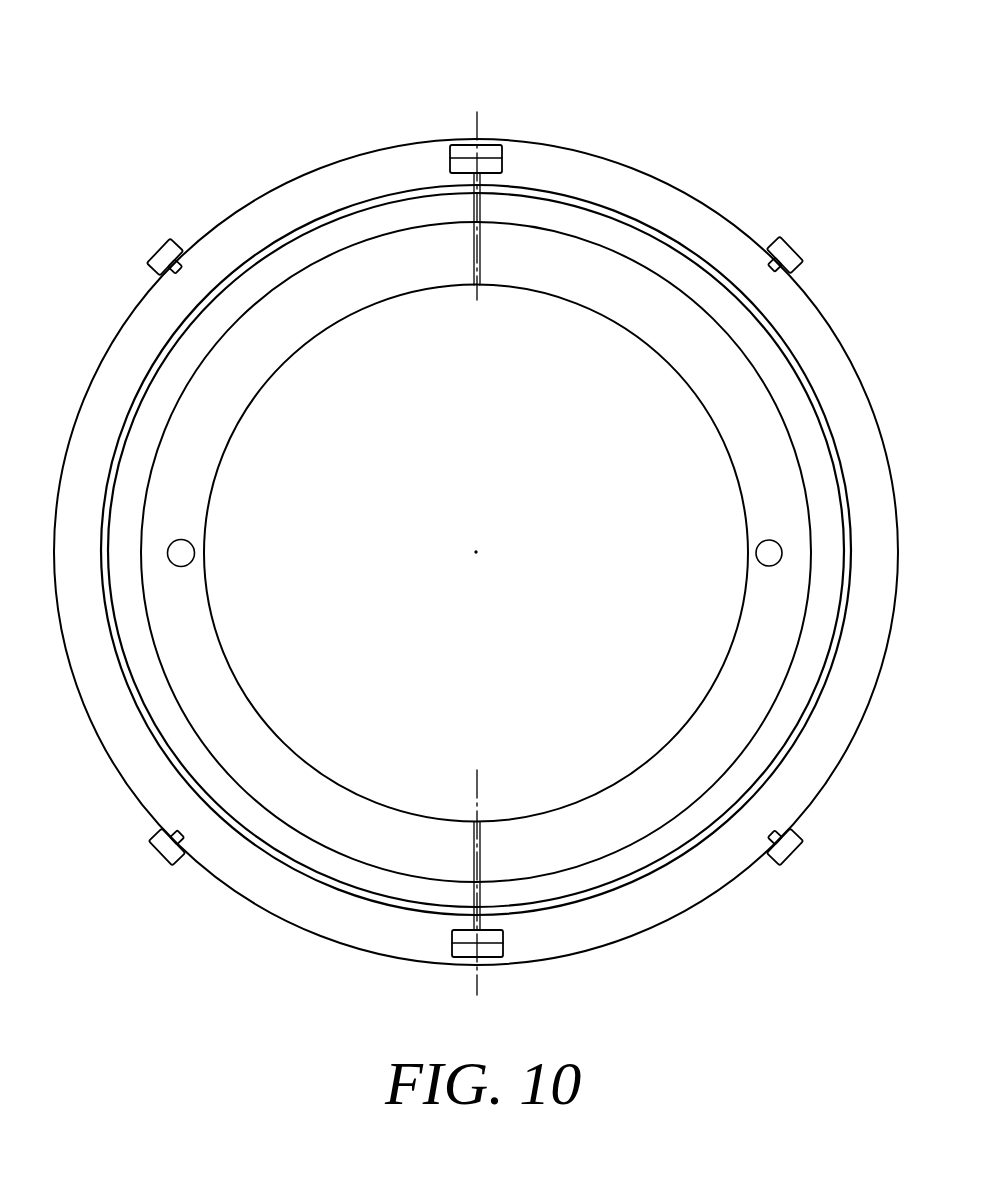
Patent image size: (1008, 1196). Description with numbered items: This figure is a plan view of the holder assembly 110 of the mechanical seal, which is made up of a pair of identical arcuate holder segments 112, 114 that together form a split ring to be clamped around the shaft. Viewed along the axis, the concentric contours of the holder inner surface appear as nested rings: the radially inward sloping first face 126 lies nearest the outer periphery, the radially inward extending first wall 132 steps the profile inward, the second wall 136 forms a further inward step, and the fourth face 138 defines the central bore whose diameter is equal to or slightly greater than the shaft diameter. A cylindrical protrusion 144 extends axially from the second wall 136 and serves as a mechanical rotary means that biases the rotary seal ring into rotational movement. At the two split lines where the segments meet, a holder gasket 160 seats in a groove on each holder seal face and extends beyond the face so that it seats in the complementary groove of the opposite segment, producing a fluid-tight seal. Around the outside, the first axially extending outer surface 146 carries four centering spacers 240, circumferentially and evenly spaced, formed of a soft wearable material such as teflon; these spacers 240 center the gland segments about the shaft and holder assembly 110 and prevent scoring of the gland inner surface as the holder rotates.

The holder assembly 110 is at (468, 60).
The holder segment 112 is at (698, 197).
The holder segment 114 is at (274, 178).
The first face 126 is at (180, 322).
The first wall 132 is at (368, 222).
The second wall 136 is at (215, 400).
The fourth face 138 is at (745, 498).
The cylindrical protrusion 144 is at (195, 553).
The first outer surface 146 is at (60, 473).
The holder gasket 160 is at (490, 160).
The centering spacers 240 is at (165, 248).